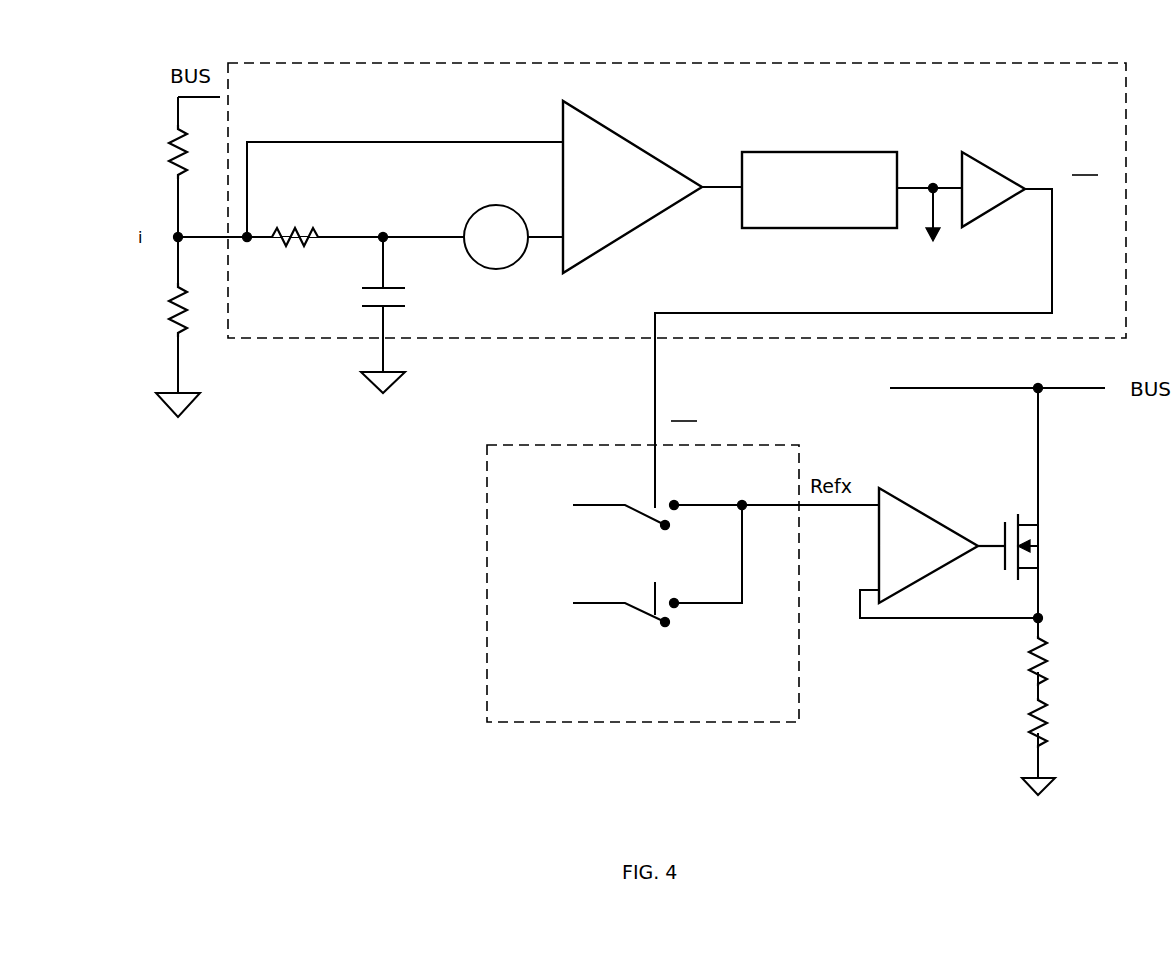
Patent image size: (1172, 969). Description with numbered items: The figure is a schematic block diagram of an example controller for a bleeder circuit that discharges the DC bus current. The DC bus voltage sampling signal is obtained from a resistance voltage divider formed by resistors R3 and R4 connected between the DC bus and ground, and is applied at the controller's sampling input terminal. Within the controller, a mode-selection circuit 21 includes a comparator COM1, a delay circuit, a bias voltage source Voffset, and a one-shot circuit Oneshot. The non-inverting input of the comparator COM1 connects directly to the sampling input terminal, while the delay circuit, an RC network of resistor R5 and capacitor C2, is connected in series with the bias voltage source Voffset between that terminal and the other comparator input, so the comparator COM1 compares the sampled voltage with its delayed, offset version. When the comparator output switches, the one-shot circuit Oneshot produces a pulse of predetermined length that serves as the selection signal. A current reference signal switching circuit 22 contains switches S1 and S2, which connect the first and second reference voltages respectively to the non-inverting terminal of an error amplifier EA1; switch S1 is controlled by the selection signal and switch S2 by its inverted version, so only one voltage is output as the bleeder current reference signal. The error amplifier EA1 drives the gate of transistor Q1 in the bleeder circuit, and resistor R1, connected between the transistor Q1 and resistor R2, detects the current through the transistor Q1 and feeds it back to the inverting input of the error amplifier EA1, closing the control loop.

The mode-selection circuit 21 is at (565, 63).
The current reference signal switching circuit 22 is at (487, 585).
The resistor R1 is at (1057, 661).
The resistor R2 is at (1057, 723).
The resistor R3 is at (157, 152).
The resistor R4 is at (157, 310).
The resistor R5 is at (295, 222).
The capacitor C2 is at (365, 315).
The bias voltage source Voffset is at (491, 256).
The comparator COM1 is at (632, 187).
The one-shot circuit Oneshot is at (819, 190).
The error amplifier EA1 is at (928, 545).
The transistor Q1 is at (1043, 547).
The switch S1 is at (626, 620).
The switch S2 is at (626, 524).